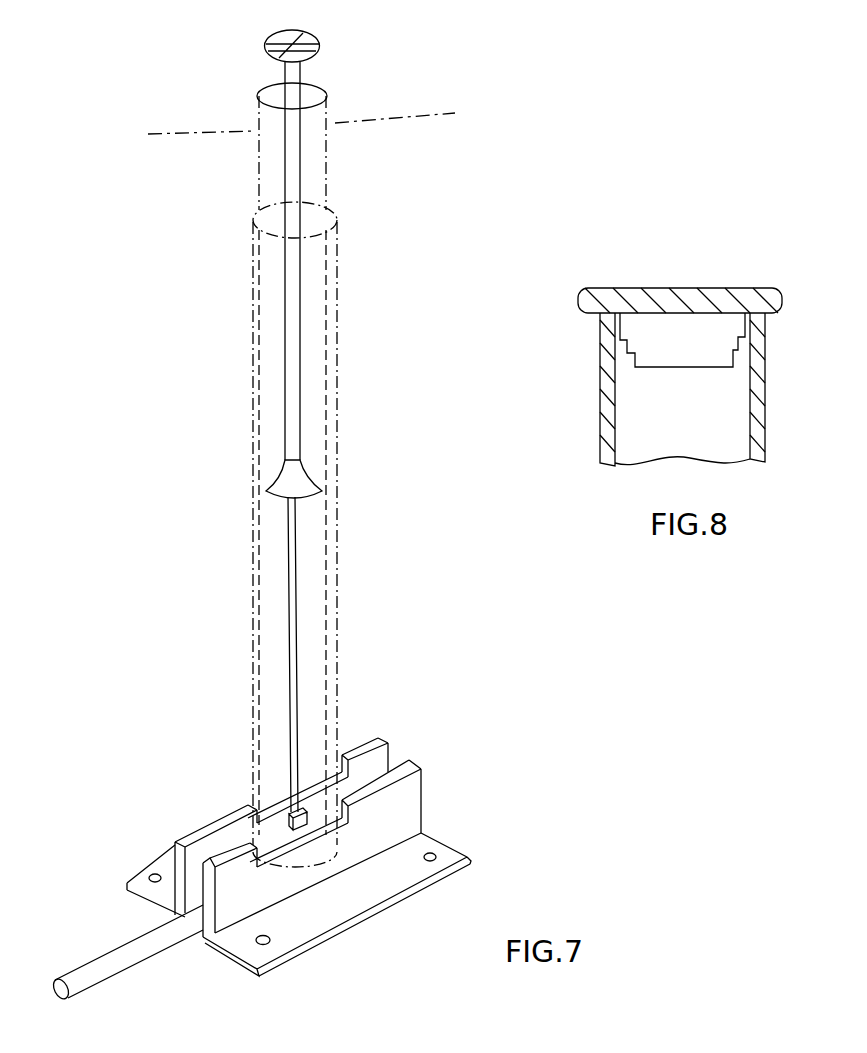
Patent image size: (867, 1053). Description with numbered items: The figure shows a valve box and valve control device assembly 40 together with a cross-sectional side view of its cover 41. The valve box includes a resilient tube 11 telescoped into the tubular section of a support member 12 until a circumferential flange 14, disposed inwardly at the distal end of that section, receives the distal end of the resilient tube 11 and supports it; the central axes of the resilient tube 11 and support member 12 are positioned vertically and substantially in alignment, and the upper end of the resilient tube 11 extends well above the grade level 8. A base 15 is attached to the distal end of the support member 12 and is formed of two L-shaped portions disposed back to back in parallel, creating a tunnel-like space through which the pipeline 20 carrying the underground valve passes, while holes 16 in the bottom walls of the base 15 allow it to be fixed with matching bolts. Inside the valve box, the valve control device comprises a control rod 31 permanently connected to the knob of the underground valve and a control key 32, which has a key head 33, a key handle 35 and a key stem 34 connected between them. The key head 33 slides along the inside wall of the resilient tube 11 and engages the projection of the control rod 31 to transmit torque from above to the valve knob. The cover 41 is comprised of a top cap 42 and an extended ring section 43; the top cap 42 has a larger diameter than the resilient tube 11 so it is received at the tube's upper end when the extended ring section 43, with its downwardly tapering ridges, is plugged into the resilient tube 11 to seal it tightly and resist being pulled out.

In FIG. 7, the grade level 8 is at (380, 117).
In FIG. 7, the valve box and valve control device assembly 40 is at (150, 223).
In FIG. 7, the key handle 35 is at (318, 42).
In FIG. 7, the key stem 34 is at (285, 180).
In FIG. 7, the control key 32 is at (285, 380).
In FIG. 7, the key head 33 is at (275, 480).
In FIG. 7, the control rod 31 is at (287, 607).
In FIG. 7, the support member 12 is at (255, 296).
In FIG. 7, the resilient tube 11 is at (327, 360).
In FIG. 8, the resilient tube 11 is at (600, 388).
In FIG. 7, the circumferential flange 14 is at (317, 883).
In FIG. 7, the base 15 is at (338, 905).
In FIG. 7, the hole 16 is at (437, 856).
In FIG. 7, the pipeline 20 is at (125, 944).
In FIG. 8, the cover 41 is at (580, 257).
In FIG. 8, the top cap 42 is at (673, 298).
In FIG. 8, the extended ring section 43 is at (713, 348).